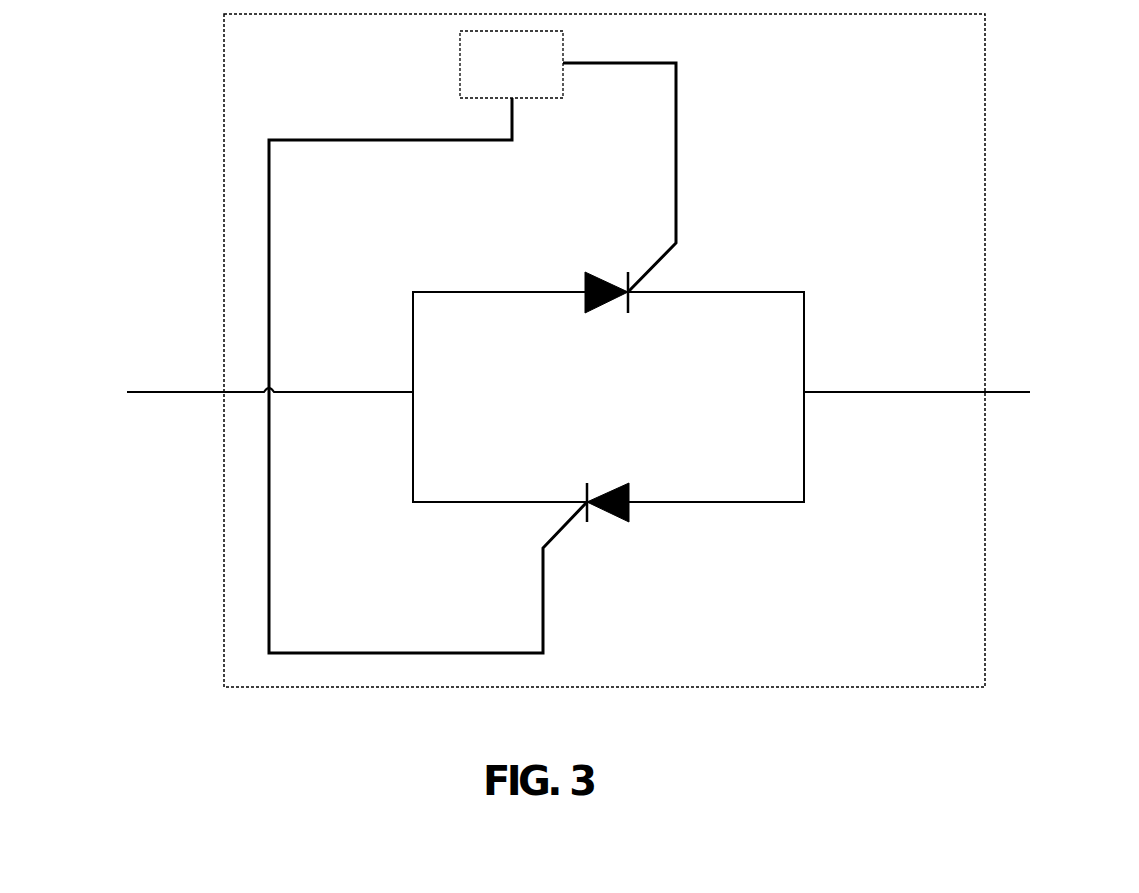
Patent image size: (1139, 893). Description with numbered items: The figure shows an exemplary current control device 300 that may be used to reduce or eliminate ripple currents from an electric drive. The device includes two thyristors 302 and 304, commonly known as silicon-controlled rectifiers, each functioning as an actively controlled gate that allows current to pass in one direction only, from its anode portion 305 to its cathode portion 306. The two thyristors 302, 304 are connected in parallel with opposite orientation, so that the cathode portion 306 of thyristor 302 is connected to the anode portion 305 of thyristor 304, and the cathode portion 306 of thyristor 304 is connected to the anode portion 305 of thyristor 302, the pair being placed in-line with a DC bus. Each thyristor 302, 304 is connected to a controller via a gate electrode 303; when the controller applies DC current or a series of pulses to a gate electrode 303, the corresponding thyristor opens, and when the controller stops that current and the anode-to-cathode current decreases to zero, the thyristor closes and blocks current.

The optical switch system 300 is at (1092, 74).
The thyristor 302 is at (585, 272).
The gate electrode 303 is at (472, 358).
The thyristor 304 is at (627, 525).
The anode portion 305 is at (570, 292).
The cathode portion 306 is at (667, 292).